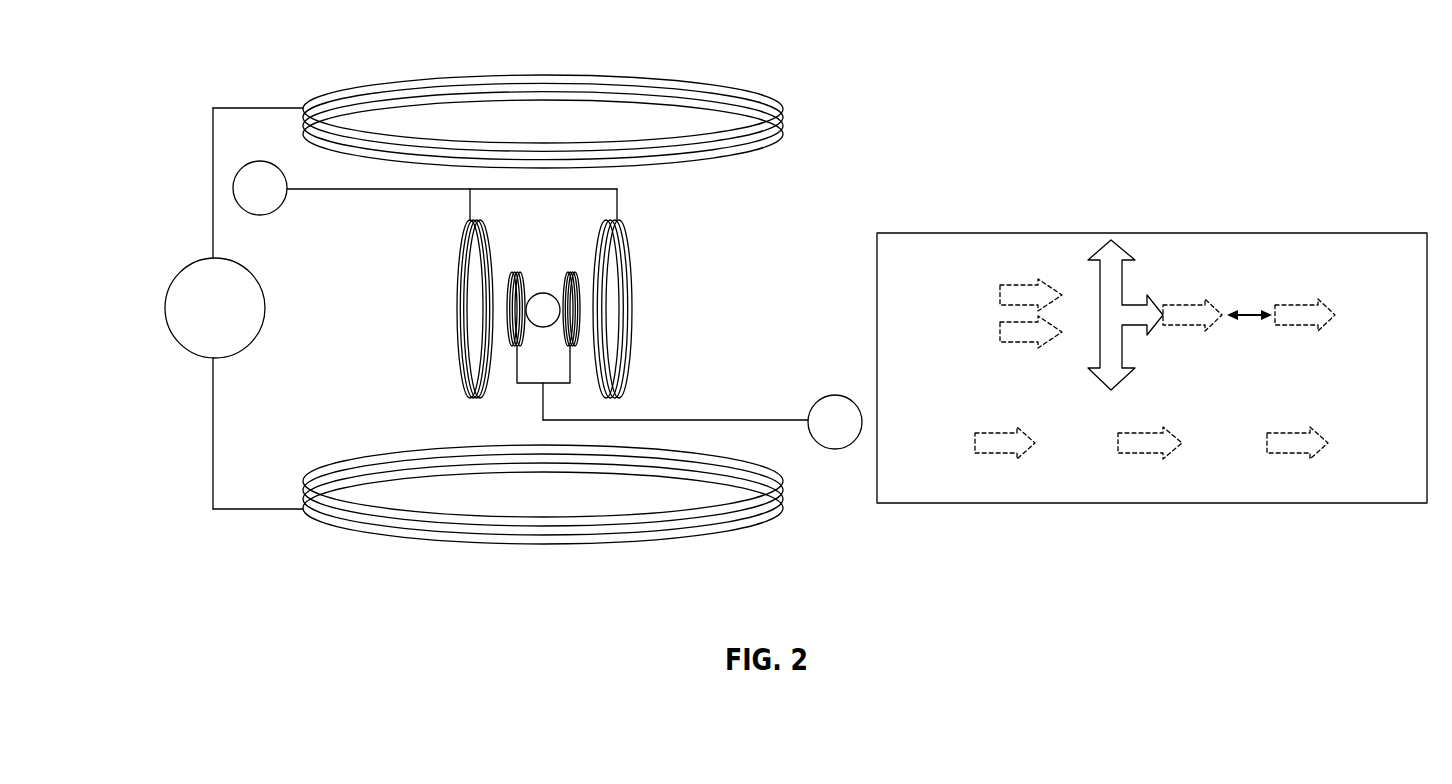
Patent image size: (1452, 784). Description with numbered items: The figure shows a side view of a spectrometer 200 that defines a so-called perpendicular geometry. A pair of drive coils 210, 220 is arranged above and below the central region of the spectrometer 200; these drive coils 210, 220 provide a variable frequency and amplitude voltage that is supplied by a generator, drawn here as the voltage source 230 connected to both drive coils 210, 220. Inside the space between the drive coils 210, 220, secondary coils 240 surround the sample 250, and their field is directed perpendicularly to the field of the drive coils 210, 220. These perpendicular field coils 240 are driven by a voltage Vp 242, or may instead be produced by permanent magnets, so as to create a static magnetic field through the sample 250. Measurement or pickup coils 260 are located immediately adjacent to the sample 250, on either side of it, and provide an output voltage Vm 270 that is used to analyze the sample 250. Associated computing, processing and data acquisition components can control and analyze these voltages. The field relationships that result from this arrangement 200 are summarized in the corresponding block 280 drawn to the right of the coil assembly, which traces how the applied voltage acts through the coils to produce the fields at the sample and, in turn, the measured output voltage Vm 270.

The spectrometer 200 is at (822, 106).
The drive coil 210 is at (541, 69).
The drive coil 220 is at (543, 556).
The AC voltage source Va(f,A) 230 is at (192, 272).
The secondary coils 240 is at (483, 312).
The voltage Vp 242 is at (282, 209).
The sample 250 is at (543, 292).
The pickup coils 260 is at (507, 330).
The output voltage Vm 270 is at (832, 395).
The block 280 is at (1342, 225).